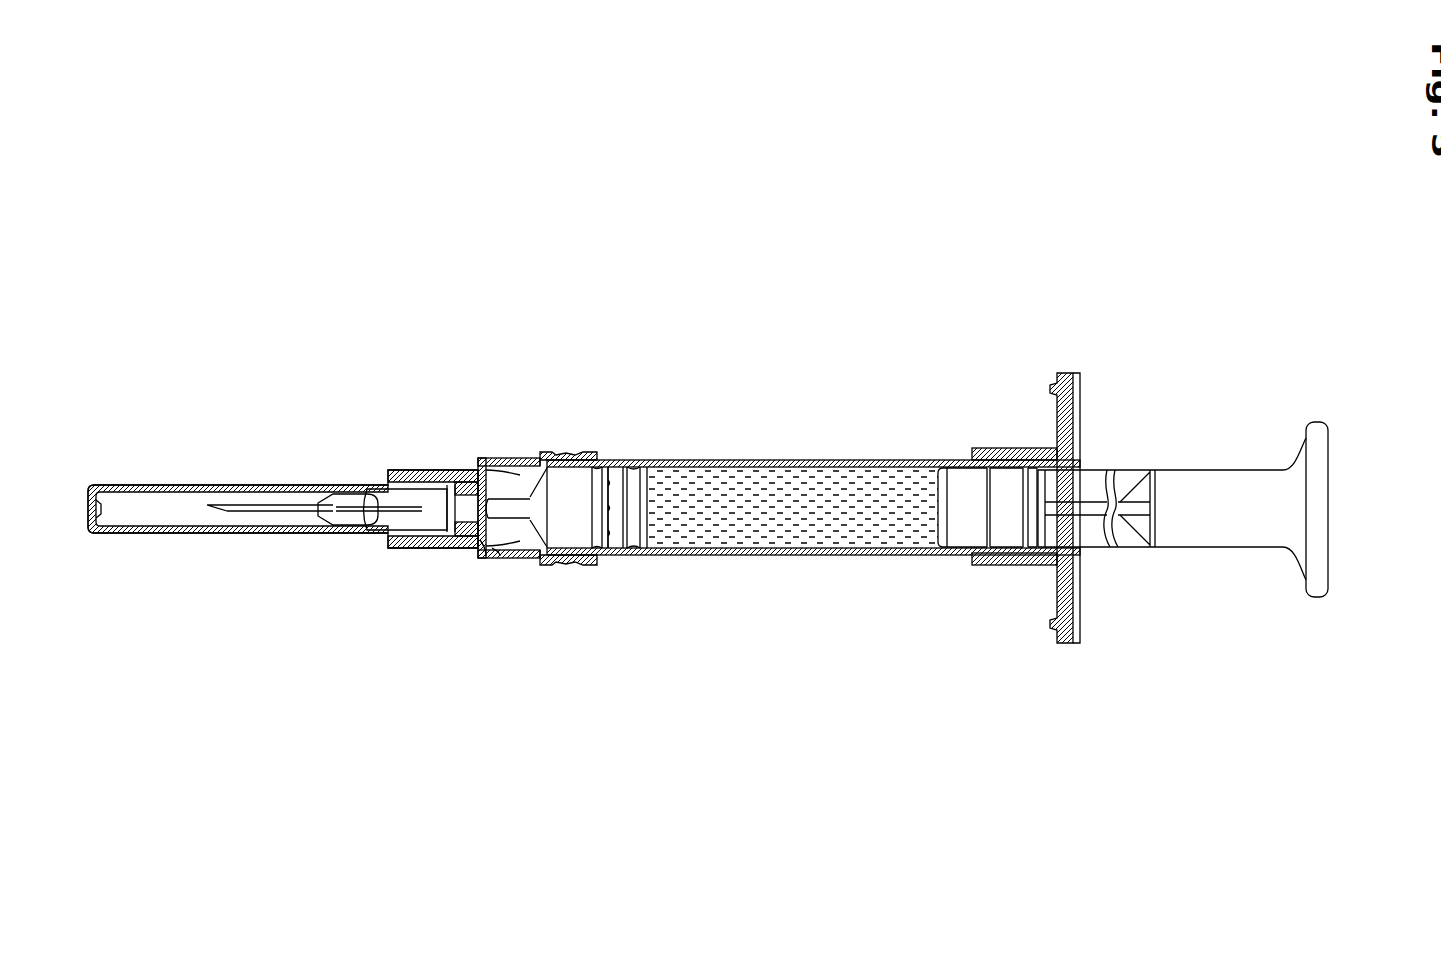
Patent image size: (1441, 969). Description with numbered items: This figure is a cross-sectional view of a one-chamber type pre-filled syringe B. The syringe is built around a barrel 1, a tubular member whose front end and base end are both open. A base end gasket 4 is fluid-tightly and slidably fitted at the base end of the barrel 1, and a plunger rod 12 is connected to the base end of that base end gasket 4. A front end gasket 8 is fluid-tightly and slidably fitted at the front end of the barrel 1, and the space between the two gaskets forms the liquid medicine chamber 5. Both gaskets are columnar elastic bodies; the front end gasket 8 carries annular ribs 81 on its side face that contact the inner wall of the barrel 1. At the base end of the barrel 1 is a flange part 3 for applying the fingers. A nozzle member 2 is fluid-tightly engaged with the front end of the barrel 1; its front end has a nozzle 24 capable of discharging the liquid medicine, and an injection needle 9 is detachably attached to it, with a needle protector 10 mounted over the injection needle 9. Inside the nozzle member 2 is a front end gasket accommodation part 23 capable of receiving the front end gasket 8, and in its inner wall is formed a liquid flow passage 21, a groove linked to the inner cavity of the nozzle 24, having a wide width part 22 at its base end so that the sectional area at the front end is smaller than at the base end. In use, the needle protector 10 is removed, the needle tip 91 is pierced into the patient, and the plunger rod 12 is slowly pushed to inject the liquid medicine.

The barrel 1 is at (723, 462).
The nozzle member 2 is at (487, 480).
The flange part 3 is at (1073, 373).
The base end gasket 4 is at (968, 488).
The liquid medicine chamber 5 is at (858, 530).
The front end gasket 8 is at (628, 548).
The annular ribs 81 is at (617, 490).
The injection needle 9 is at (368, 482).
The needle protector 10 is at (240, 483).
The plunger rod 12 is at (1180, 470).
The liquid flow passage 21 is at (482, 560).
The wide width part 22 is at (520, 462).
The front end gasket accommodation part 23 is at (505, 485).
The nozzle 24 is at (455, 475).
The needle tip 91 is at (228, 512).
The pre-filled syringe B is at (805, 358).